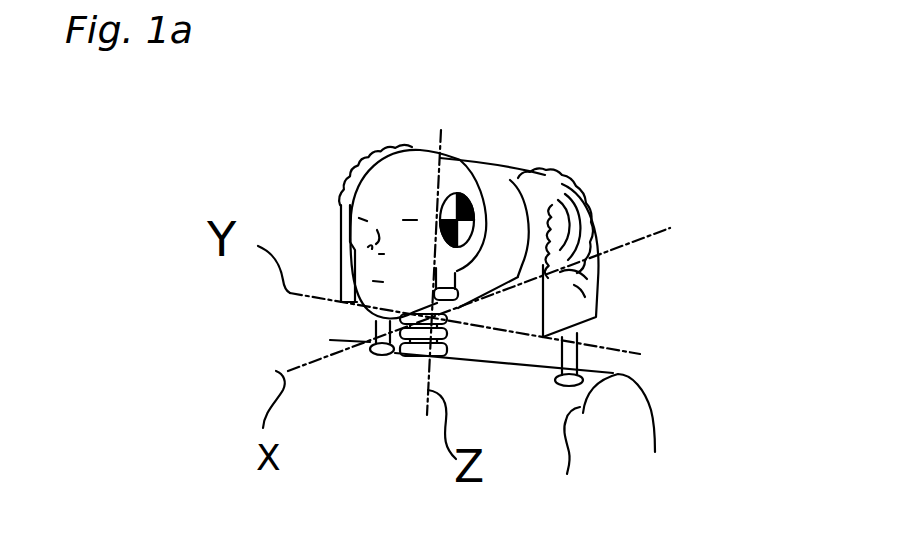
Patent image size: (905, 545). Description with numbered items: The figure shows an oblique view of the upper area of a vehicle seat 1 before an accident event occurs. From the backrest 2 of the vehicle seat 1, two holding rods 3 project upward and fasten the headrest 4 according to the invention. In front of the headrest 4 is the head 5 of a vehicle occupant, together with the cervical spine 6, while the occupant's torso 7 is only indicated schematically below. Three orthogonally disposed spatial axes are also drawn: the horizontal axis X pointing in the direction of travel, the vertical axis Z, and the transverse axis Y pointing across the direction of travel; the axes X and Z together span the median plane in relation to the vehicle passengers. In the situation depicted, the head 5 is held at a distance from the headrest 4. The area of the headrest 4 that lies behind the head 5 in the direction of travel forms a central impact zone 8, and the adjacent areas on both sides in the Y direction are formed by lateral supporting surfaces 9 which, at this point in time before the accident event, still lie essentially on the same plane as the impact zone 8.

The vehicle seat 1 is at (660, 426).
The backrest 2 is at (563, 469).
The holding rods 3 is at (570, 359).
The headrest 4 is at (600, 193).
The head 5 is at (428, 161).
The cervical spine 6 is at (416, 358).
The torso 7 is at (458, 352).
The impact zone 8 is at (504, 222).
The side cheeks 9 is at (342, 219).